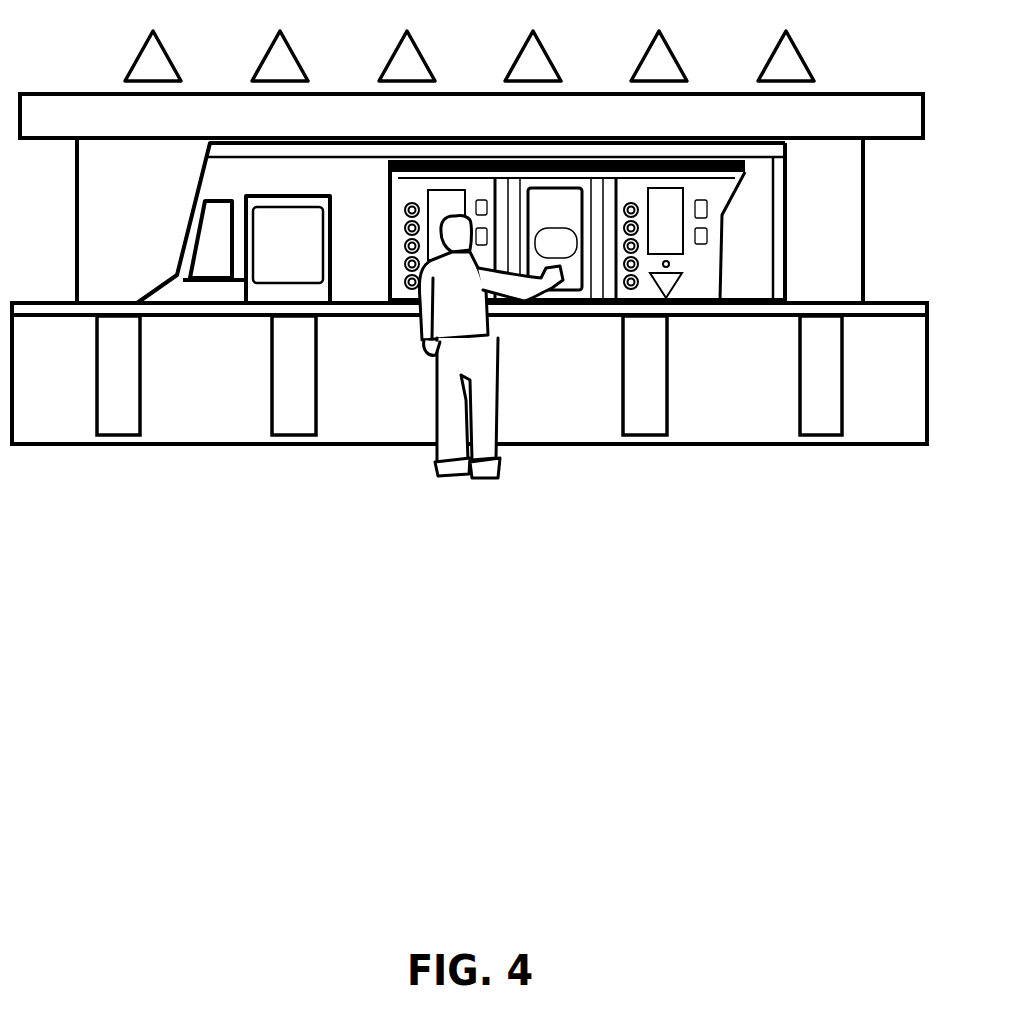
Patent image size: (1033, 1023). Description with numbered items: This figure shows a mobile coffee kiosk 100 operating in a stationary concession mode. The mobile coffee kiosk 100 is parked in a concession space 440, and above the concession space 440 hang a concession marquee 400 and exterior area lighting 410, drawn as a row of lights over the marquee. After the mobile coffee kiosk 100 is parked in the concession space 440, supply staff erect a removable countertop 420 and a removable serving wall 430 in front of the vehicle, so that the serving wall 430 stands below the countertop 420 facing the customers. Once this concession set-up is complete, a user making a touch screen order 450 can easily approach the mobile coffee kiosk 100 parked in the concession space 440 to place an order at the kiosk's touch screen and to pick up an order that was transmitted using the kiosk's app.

The mobile coffee kiosk 100 is at (192, 210).
The concession marquee 400 is at (848, 108).
The exterior area lighting 410 is at (530, 53).
The removable countertop 420 is at (898, 303).
The removable serving wall 430 is at (682, 416).
The concession space 440 is at (835, 232).
The user making a touch screen order 450 is at (500, 452).